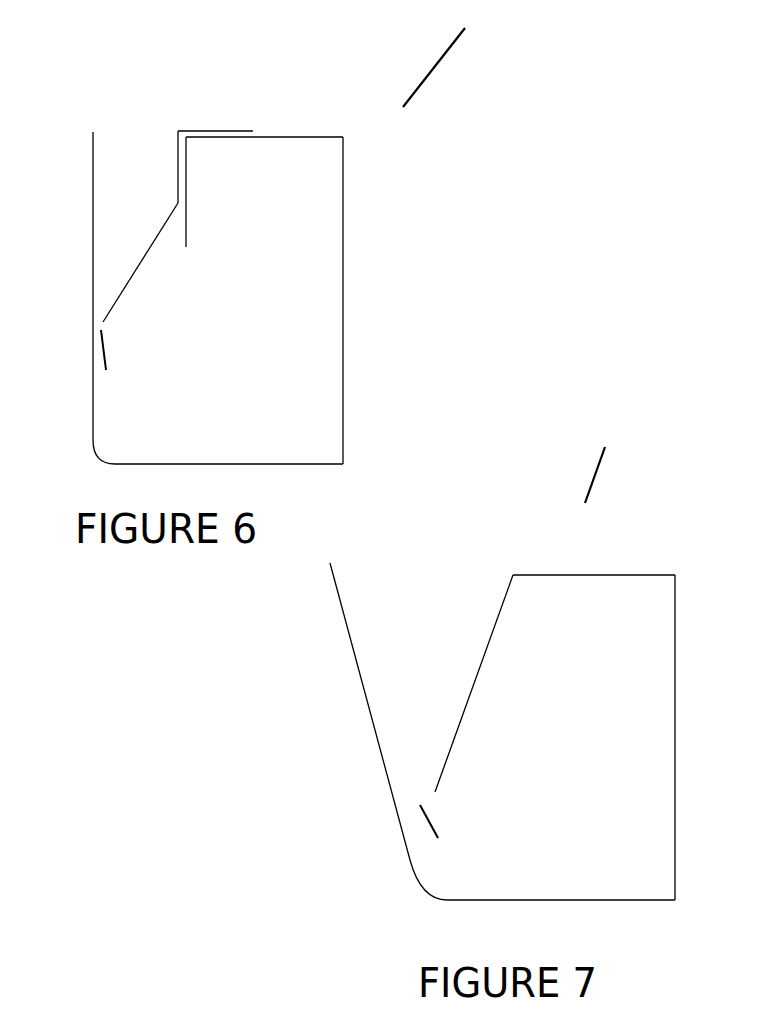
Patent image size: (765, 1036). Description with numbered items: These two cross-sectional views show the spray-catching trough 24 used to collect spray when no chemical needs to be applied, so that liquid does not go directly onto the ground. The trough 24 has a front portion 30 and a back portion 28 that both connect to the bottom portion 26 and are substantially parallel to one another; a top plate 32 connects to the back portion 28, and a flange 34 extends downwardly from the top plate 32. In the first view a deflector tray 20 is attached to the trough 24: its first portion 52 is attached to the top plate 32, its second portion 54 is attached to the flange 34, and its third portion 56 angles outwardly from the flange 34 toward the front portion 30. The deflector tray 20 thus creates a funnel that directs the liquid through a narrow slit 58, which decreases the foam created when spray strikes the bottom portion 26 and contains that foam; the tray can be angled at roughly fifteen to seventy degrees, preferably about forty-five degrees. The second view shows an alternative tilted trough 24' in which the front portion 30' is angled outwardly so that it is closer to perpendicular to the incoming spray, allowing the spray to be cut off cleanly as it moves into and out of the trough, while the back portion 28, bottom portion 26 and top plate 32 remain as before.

In FIG. 6, the deflector tray 20 is at (160, 150).
In FIG. 7, the deflector tray 20 is at (472, 688).
In FIG. 7, the trough 24 is at (616, 474).
In FIG. 6, the tilted trough 24' is at (455, 67).
In FIG. 6, the bottom portion 26 is at (264, 466).
In FIG. 7, the bottom portion 26 is at (610, 900).
In FIG. 6, the back portion 28 is at (345, 311).
In FIG. 7, the back portion 28 is at (675, 688).
In FIG. 6, the front portion 30 is at (67, 298).
In FIG. 7, the angled front portion 30' is at (367, 731).
In FIG. 6, the top plate 32 is at (278, 132).
In FIG. 7, the top plate 32 is at (613, 573).
In FIG. 6, the flange 34 is at (187, 188).
In FIG. 6, the first portion 52 is at (213, 131).
In FIG. 6, the second portion 54 is at (177, 178).
In FIG. 6, the third portion 56 is at (152, 250).
In FIG. 6, the narrow slit 58 is at (106, 370).
In FIG. 7, the narrow slit 58 is at (438, 838).